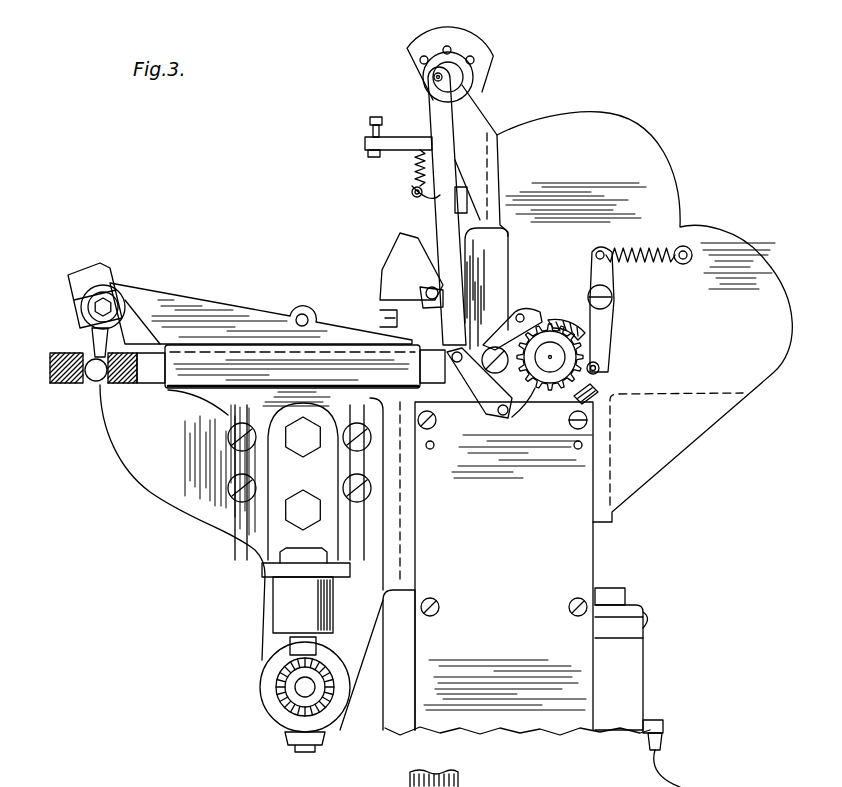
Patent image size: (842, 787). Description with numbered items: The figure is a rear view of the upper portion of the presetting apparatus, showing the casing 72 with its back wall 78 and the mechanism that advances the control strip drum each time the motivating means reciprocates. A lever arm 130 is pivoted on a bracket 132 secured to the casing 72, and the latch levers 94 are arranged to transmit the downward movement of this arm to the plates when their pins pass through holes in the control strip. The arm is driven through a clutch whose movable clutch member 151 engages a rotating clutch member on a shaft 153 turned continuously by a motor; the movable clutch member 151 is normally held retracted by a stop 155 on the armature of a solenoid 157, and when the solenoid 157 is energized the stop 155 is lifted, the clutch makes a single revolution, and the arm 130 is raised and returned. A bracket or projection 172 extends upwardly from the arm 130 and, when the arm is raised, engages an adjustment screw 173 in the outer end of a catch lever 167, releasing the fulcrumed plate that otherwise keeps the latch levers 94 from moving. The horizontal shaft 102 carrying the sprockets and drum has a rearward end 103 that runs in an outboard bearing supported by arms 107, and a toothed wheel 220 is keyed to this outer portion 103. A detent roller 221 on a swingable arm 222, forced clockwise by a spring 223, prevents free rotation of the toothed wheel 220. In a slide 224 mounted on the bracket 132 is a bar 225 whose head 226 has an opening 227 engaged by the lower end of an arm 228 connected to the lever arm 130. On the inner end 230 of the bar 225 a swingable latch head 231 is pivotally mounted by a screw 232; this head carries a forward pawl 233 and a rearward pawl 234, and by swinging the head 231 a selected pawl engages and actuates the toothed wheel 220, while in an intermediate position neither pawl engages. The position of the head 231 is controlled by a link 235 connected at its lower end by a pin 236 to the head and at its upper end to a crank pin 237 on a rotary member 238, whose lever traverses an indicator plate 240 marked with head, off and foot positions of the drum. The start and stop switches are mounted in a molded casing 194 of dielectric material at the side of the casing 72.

The casing 72 is at (586, 558).
The back wall 78 is at (540, 713).
The latch lever 94 is at (442, 282).
The horizontal shaft 102 is at (586, 388).
The rearward end of shaft 103 is at (542, 362).
The arms 107 is at (612, 300).
The lever arm 130 is at (192, 300).
The bracket 132 is at (152, 478).
The movable clutch member 151 is at (275, 690).
The shaft 153 is at (462, 783).
The stop 155 is at (292, 650).
The solenoid 157 is at (285, 600).
The catch lever 167 is at (380, 140).
The bracket or projection 172 is at (405, 250).
The adjustment screw 173 is at (370, 157).
The molded casing 194 is at (630, 658).
The toothed wheel 220 is at (598, 350).
The detent roller 221 is at (600, 368).
The swingable arm 222 is at (612, 322).
The spring 223 is at (684, 240).
The slide 224 is at (247, 358).
The bar 225 is at (147, 360).
The head 226 is at (68, 385).
The opening 227 is at (93, 382).
The arm 228 is at (95, 345).
The inner end of bar 230 is at (460, 385).
The swingable latch head 231 is at (493, 410).
The screw 232 is at (513, 322).
The forward pawl 233 is at (563, 317).
The rearward pawl 234 is at (513, 416).
The link 235 is at (440, 140).
The pin 236 is at (453, 353).
The crank pin 237 is at (434, 78).
The rotary member 238 is at (455, 85).
The indicator plate 240 is at (410, 60).